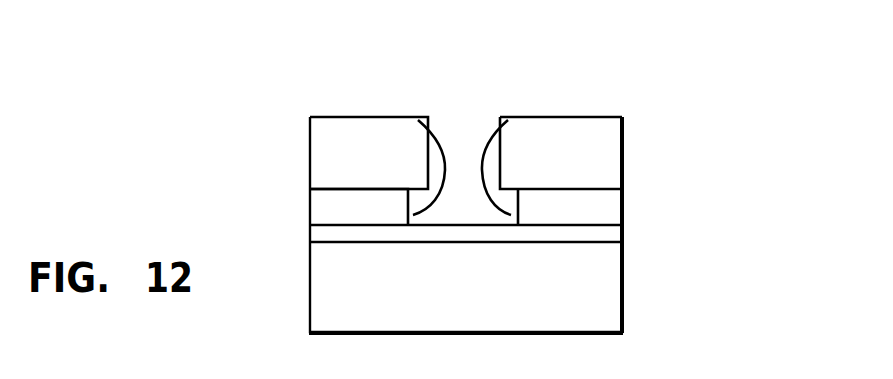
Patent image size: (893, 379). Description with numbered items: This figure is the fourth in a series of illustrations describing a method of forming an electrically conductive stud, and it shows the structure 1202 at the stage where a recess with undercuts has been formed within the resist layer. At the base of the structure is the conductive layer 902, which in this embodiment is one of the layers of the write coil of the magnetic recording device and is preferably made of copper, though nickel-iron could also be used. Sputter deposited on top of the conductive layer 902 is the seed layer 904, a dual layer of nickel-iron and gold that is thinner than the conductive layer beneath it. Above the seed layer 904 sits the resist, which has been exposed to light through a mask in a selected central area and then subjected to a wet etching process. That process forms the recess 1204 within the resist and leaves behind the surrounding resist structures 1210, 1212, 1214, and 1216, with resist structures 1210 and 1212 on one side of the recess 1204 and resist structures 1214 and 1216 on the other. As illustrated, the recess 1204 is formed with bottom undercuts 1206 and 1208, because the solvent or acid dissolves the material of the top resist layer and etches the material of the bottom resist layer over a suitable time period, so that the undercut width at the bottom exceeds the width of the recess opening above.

The semiconductor device structure 1202 is at (579, 174).
The recess 1204 is at (463, 136).
The bottom undercut 1206 is at (418, 120).
The bottom undercut 1208 is at (508, 120).
The resist structure 1210 is at (330, 205).
The resist structure 1212 is at (330, 168).
The resist structure 1214 is at (593, 212).
The resist structure 1216 is at (592, 154).
The seed layer 904 is at (600, 233).
The conductive layer 902 is at (598, 296).